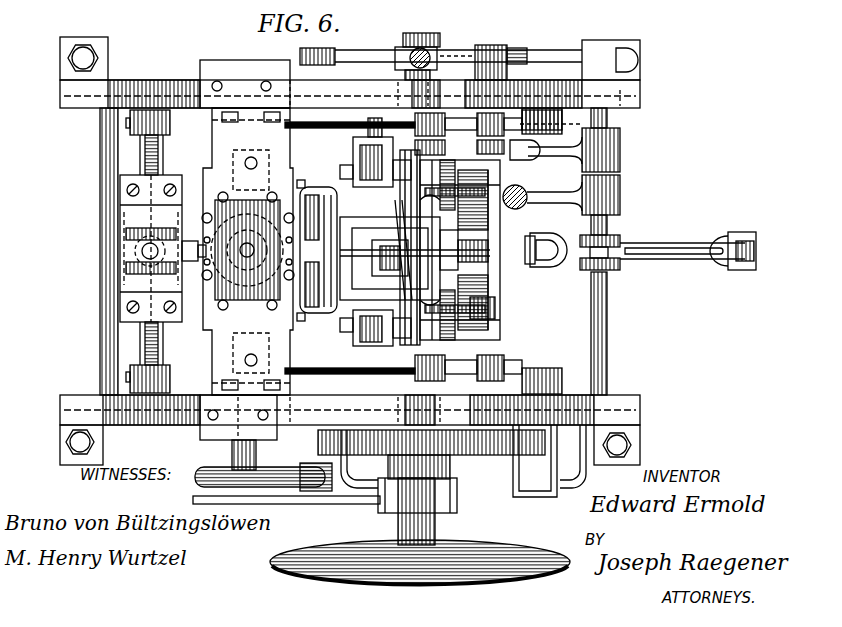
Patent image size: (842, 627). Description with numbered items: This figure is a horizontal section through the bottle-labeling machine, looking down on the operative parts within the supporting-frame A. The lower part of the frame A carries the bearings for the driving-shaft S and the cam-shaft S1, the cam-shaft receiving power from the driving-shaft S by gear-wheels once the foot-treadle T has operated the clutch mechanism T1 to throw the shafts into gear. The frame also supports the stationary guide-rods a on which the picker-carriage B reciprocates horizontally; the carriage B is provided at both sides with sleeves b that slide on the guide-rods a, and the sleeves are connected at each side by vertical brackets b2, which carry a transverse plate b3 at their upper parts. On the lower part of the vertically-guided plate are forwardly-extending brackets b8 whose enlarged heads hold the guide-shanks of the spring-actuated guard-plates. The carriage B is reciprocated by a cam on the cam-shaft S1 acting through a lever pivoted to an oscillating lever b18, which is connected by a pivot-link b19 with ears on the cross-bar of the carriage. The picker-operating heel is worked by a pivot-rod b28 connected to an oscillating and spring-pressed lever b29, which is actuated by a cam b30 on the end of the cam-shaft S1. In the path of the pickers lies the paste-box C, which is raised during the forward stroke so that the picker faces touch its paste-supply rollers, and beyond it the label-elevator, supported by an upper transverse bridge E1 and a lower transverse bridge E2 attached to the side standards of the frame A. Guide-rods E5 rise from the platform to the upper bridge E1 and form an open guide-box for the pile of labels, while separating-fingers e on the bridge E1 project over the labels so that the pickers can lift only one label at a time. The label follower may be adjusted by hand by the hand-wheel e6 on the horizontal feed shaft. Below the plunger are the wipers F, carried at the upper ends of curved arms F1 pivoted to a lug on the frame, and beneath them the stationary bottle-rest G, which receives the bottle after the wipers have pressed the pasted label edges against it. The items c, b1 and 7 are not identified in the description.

The supporting-frame A is at (340, 92).
The guide-rods a is at (351, 251).
The wipers F is at (140, 218).
The curved arms F1 is at (145, 160).
The bottle-rest G is at (130, 253).
The upper transverse bridge E1 is at (290, 352).
The lower transverse bridge E2 is at (248, 251).
The guide-rods E5 is at (228, 196).
The separating-fingers e is at (207, 282).
The pivot pins c is at (215, 225).
The paste-box C is at (317, 250).
The forwardly-extending brackets b8 is at (355, 175).
The transverse plate b3 is at (360, 340).
The vertical brackets b2 is at (482, 196).
The picker-carriage B is at (500, 183).
The driving-shaft S is at (493, 172).
The cam-shaft S1 is at (432, 45).
The pivot-rod b28 is at (445, 45).
The oscillating and spring-pressed lever b29 is at (530, 50).
The cam b30 is at (300, 56).
The sleeves b is at (430, 113).
The roller b1 is at (485, 113).
The roller 7 is at (550, 238).
The pivot-link b19 is at (624, 199).
The oscillating lever b18 is at (756, 251).
The clutch mechanism T1 is at (452, 461).
The foot-treadle T is at (193, 500).
The hand-wheel e6 is at (258, 455).